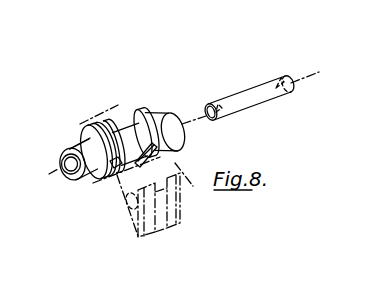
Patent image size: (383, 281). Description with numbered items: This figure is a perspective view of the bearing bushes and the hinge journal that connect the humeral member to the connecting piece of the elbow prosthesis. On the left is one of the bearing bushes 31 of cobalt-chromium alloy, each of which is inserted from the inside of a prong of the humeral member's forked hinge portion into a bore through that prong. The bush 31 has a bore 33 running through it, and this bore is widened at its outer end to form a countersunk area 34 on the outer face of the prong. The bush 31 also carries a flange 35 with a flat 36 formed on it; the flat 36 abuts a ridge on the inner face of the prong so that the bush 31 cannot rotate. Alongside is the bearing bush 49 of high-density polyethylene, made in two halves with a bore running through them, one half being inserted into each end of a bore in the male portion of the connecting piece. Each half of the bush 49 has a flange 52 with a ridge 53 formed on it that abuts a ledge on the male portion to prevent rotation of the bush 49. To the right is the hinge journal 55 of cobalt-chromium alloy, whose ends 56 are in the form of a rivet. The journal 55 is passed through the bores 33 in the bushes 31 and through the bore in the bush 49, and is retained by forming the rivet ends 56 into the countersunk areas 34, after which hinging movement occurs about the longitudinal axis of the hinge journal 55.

The bearing bush 31 is at (76, 143).
The bore 33 is at (66, 176).
The countersunk area 34 is at (61, 161).
The flange 35 is at (113, 177).
The flat 36 is at (76, 140).
The bearing bush 49 is at (113, 128).
The flange 52 is at (96, 130).
The ridge 53 is at (120, 200).
The hinge journal 55 is at (247, 85).
The ends 56 is at (211, 103).